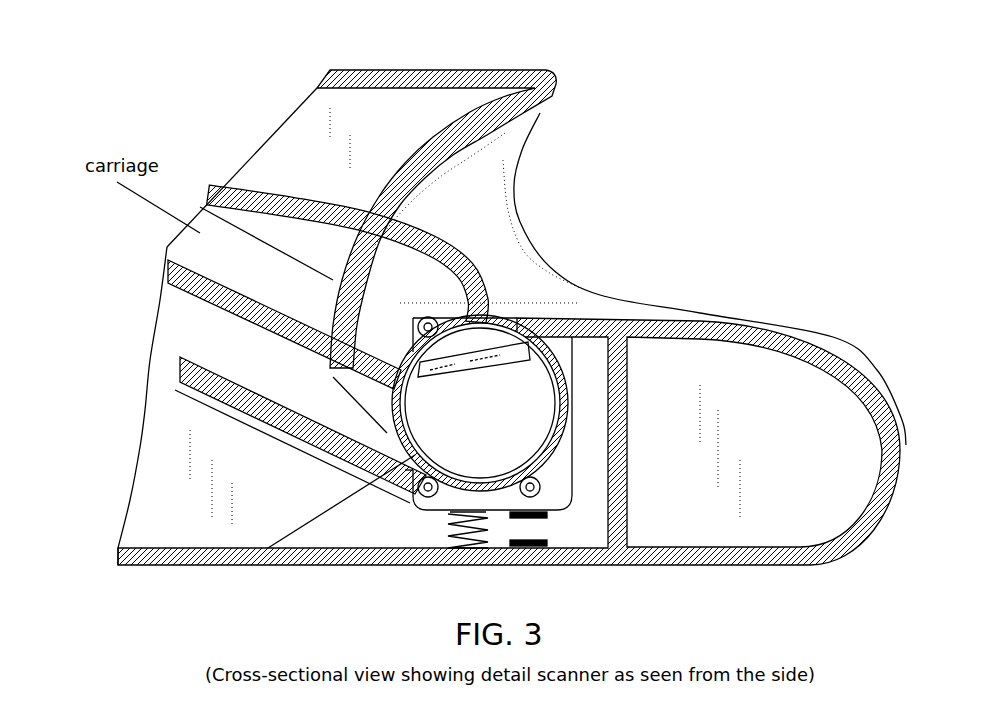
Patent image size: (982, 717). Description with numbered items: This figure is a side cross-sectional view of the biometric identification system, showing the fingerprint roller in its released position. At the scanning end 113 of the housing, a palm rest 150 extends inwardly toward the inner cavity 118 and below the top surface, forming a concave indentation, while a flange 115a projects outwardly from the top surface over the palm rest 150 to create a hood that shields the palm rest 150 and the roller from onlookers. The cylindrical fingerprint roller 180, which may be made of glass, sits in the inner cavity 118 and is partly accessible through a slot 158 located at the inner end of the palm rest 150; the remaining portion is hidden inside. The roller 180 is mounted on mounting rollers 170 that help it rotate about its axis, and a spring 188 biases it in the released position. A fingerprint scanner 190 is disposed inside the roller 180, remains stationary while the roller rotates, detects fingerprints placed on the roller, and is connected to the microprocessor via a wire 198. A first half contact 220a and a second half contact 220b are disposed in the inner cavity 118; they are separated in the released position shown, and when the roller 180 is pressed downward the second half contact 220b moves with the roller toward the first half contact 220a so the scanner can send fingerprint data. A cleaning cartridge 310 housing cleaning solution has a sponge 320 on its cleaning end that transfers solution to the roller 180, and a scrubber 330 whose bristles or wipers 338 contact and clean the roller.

The scanning end 113 is at (457, 127).
The flange 115a is at (493, 188).
The wire 198 is at (257, 197).
The palm rest 150 is at (733, 333).
The fingerprint scanner 190 is at (552, 317).
The fingerprint roller 180 is at (500, 335).
The slot 158 is at (509, 335).
The mounting rollers 170 is at (420, 487).
The bristles or wipers 338 is at (407, 470).
The spring 188 is at (447, 548).
The first half contact 220a is at (545, 516).
The second half contact 220b is at (547, 545).
The cleaning cartridge 310 is at (223, 338).
The sponge 320 is at (400, 440).
The scrubber 330 is at (405, 455).
The inner cavity 118 is at (197, 523).